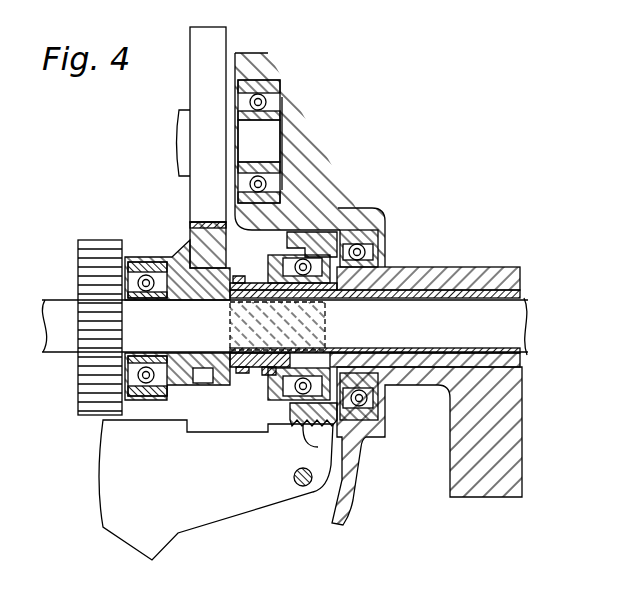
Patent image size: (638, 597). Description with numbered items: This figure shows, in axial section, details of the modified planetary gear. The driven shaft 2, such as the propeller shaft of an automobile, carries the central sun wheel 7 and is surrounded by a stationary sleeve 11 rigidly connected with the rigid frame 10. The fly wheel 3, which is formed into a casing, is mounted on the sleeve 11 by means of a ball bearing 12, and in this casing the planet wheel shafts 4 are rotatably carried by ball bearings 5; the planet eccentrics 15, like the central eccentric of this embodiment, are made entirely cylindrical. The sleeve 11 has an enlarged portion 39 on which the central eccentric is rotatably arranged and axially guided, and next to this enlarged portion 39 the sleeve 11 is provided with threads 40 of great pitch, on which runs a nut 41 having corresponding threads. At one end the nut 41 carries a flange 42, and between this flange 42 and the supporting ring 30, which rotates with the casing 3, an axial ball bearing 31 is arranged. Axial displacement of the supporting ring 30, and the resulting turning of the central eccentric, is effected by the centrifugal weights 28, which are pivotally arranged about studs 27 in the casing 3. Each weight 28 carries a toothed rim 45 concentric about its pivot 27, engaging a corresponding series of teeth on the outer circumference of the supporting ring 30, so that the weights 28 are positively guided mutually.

The driven shaft 2 is at (59, 350).
The fly wheel 3 is at (290, 157).
The shaft 4 is at (270, 134).
The ball bearing 5 is at (278, 87).
The sun wheel 7 is at (88, 393).
The frame 10 is at (420, 272).
The sleeve 11 is at (420, 362).
The ball bearing 12 is at (380, 240).
The planet eccentric 15 is at (228, 34).
The stud 27 is at (303, 487).
The centrifugal weight 28 is at (100, 483).
The supporting ring 30 is at (337, 212).
The axial ball bearing 31 is at (292, 253).
The enlarged portion 39 is at (192, 378).
The threads 40 is at (259, 369).
The nut 41 is at (314, 356).
The flange 42 is at (268, 263).
The toothed rim 45 is at (315, 423).